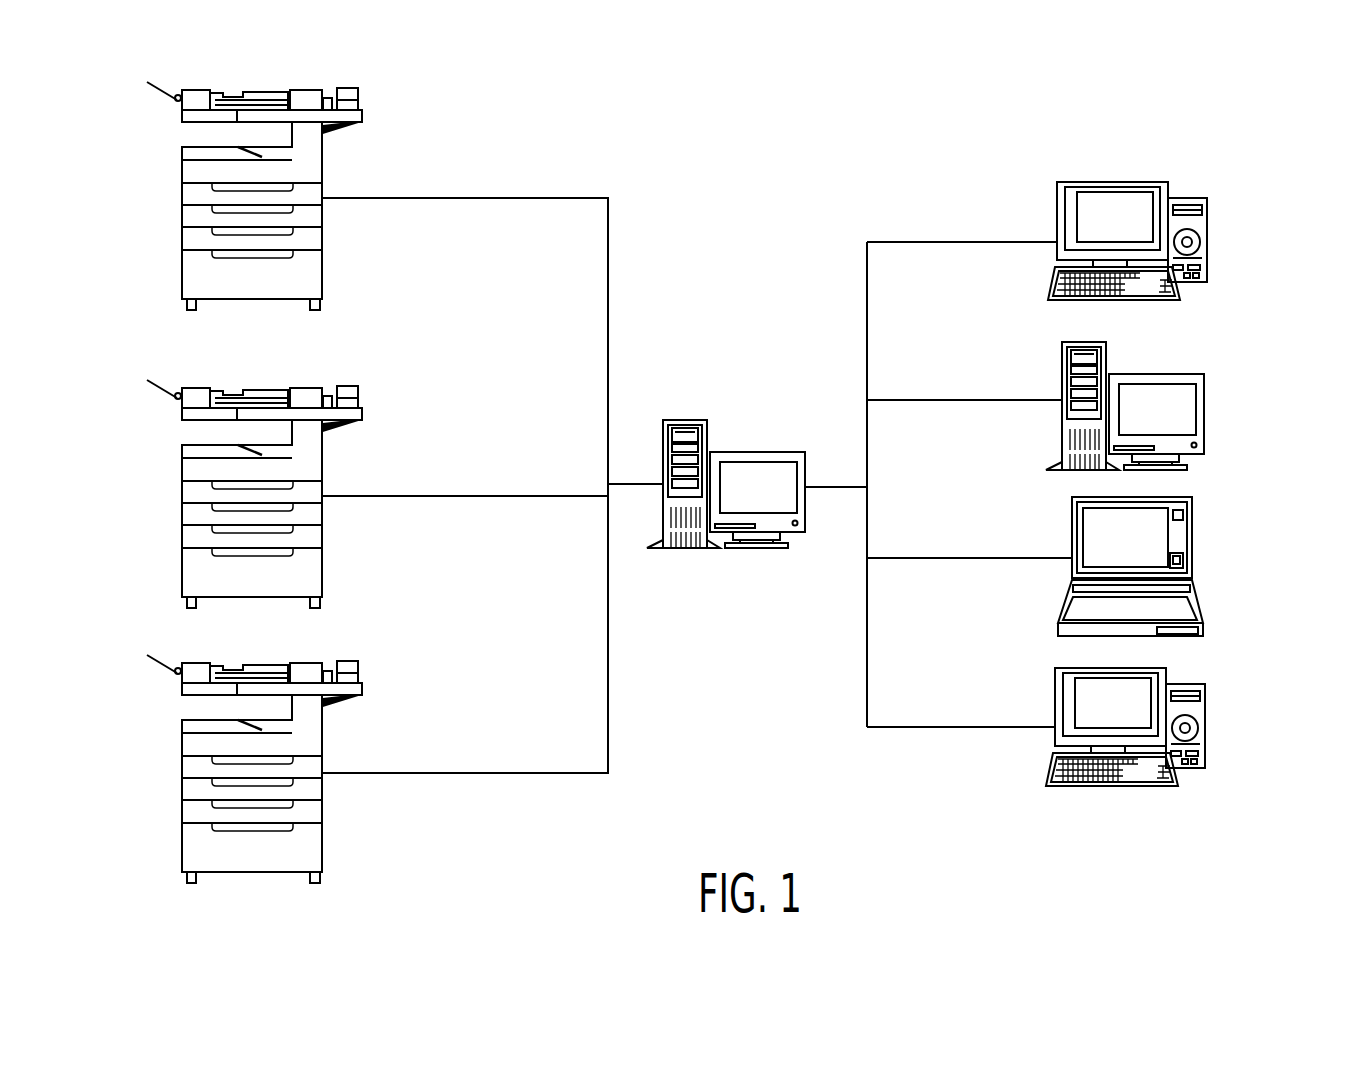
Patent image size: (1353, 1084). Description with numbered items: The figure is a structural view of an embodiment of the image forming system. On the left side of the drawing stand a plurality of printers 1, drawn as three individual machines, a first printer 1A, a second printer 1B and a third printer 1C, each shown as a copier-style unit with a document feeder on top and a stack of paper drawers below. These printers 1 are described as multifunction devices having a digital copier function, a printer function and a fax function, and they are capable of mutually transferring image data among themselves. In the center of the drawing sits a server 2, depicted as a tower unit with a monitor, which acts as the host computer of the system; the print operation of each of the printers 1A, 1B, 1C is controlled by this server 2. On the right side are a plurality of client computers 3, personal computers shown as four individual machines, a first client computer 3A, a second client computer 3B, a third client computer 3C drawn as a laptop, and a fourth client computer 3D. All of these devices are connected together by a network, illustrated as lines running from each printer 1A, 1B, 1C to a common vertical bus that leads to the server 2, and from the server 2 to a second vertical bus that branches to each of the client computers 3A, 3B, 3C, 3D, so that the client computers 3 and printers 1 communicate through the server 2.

The printers 1 is at (234, 482).
The printer 1A is at (183, 197).
The printer 1B is at (183, 495).
The printer 1C is at (183, 772).
The server 2 is at (765, 452).
The client computers 3 is at (1173, 484).
The client computer 3A is at (1207, 238).
The client computer 3B is at (1207, 406).
The client computer 3C is at (1192, 553).
The client computer 3D is at (1205, 724).